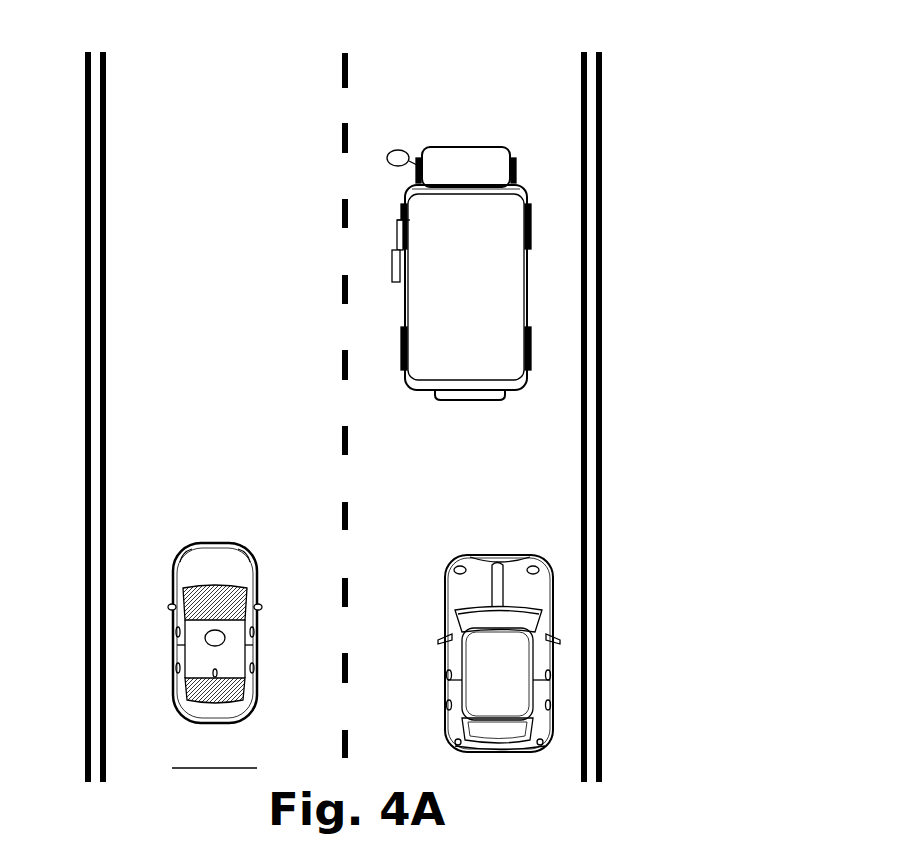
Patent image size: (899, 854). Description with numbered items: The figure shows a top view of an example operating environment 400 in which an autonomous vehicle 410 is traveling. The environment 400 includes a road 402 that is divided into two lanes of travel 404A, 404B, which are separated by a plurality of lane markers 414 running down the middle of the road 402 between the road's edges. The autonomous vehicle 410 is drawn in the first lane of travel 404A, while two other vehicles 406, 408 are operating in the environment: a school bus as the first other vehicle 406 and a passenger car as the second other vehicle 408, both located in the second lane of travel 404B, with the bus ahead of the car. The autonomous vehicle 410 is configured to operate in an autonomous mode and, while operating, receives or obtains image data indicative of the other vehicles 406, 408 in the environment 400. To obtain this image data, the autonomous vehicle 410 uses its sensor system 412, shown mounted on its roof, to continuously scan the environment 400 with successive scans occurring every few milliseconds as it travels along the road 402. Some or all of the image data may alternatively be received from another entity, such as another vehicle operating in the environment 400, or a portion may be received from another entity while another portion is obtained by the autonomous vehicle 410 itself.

The environment 400 is at (828, 98).
The road 402 is at (78, 127).
The lane of travel 404A is at (246, 75).
The lane of travel 404B is at (500, 75).
The other vehicle 406 is at (410, 192).
The other vehicle 408 is at (451, 566).
The autonomous vehicle 410 is at (187, 656).
The sensor system 412 is at (206, 641).
The lane markers 414 is at (341, 283).